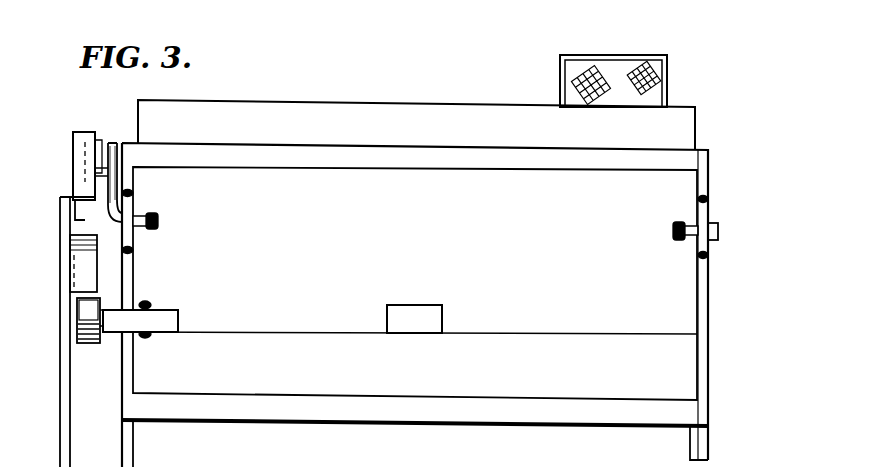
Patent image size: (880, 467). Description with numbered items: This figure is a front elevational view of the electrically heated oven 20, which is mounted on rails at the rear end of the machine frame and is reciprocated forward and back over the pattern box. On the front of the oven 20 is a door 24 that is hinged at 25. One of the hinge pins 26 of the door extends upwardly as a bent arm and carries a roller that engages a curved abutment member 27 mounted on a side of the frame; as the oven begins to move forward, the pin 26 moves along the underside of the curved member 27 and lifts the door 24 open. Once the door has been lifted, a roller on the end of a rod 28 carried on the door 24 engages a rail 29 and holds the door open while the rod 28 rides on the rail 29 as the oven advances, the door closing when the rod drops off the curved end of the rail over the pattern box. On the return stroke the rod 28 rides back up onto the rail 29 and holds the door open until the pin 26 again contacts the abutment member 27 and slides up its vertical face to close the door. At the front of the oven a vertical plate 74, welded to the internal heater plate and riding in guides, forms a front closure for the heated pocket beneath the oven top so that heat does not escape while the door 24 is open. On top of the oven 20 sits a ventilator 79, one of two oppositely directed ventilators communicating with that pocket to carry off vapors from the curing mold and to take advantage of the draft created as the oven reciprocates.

The oven 20 is at (708, 353).
The door 24 is at (690, 280).
The hinge 25 is at (698, 226).
The hinge pin 26 is at (116, 143).
The curved abutment member 27 is at (73, 140).
The rod 28 is at (113, 333).
The rail 29 is at (90, 263).
The vertical plate 74 is at (695, 136).
The ventilator 79 is at (660, 85).